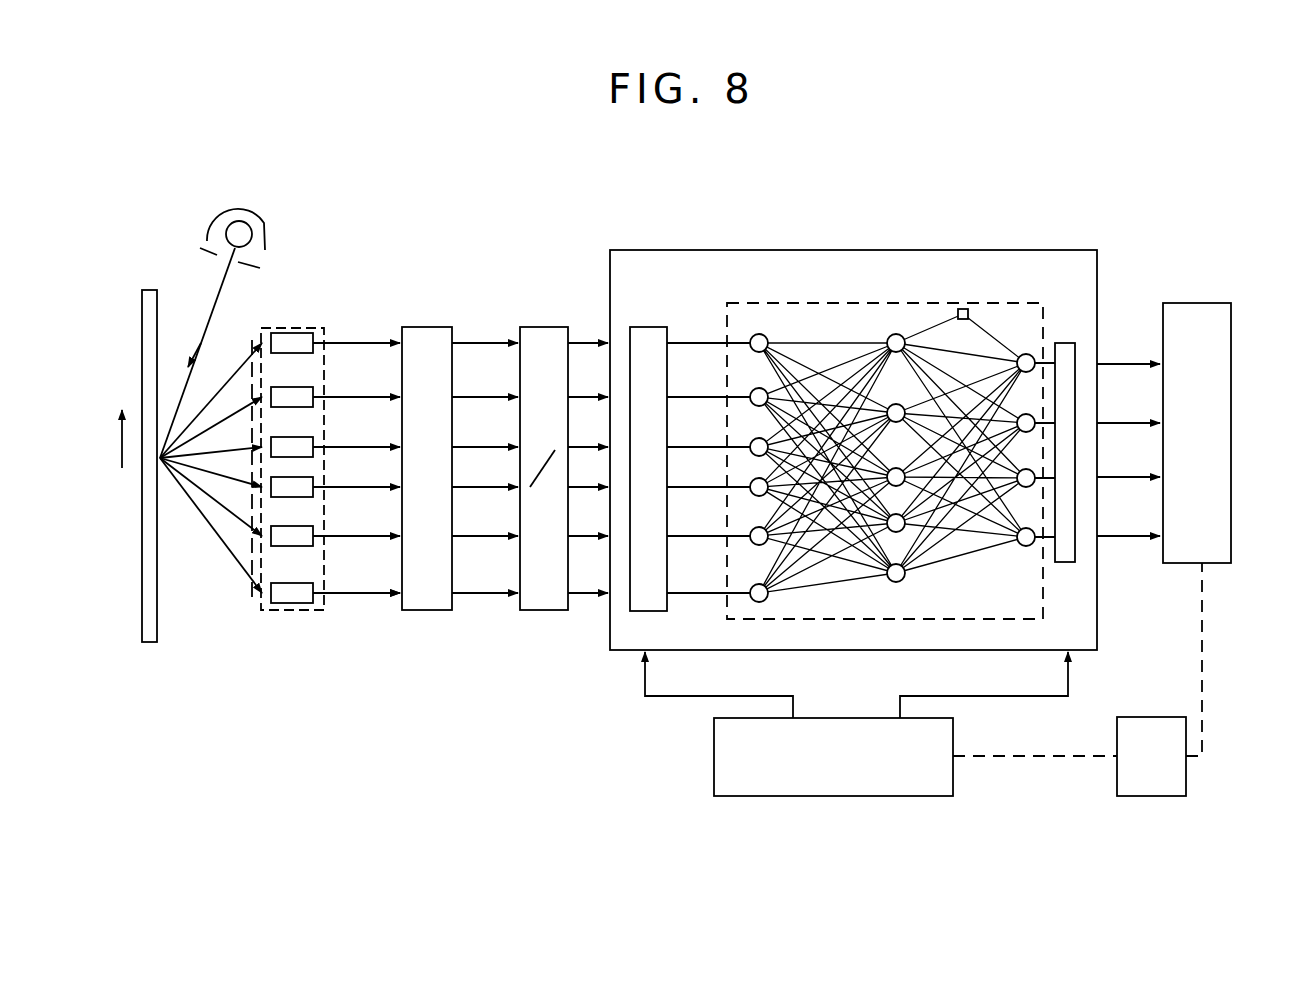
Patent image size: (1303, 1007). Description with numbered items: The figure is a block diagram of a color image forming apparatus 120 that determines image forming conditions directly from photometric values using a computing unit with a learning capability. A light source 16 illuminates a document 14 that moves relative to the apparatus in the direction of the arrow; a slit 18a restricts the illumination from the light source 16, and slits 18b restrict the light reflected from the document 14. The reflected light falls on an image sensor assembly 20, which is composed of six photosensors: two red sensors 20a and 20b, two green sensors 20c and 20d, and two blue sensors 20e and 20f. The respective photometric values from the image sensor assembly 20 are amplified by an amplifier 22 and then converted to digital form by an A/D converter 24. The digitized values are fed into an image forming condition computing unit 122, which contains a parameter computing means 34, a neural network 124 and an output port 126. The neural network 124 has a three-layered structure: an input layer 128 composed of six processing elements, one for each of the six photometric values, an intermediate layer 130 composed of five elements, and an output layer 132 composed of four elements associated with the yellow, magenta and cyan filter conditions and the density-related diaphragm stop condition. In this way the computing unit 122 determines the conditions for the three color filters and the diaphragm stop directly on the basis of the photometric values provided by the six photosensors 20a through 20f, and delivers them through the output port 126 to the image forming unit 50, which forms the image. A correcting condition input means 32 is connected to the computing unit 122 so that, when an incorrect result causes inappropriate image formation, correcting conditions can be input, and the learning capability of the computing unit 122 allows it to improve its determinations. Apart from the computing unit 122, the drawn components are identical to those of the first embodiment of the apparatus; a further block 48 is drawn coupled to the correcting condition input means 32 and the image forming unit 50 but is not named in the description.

The document 14 is at (142, 623).
The light source 16 is at (247, 222).
The slit 18a is at (203, 248).
The slits 18b is at (248, 347).
The image sensor assembly 20 is at (300, 613).
The red sensor 20a is at (297, 337).
The red sensor 20b is at (297, 393).
The green sensor 20c is at (305, 437).
The green sensor 20d is at (288, 492).
The blue sensor 20e is at (298, 547).
The blue sensor 20f is at (308, 597).
The amplifier 22 is at (430, 611).
The A/D converter 24 is at (545, 611).
The color image forming apparatus 120 is at (572, 262).
The parameter computing means 34 is at (647, 327).
The image forming condition computing unit 122 is at (837, 250).
The input layer 128 is at (757, 322).
The intermediate layer 130 is at (898, 324).
The neural network 124 is at (968, 297).
The output layer 132 is at (1025, 320).
The output port 126 is at (1068, 343).
The image forming unit 50 is at (1227, 438).
The correcting condition input means 32 is at (855, 797).
The learning/teaching unit 48 is at (1150, 797).